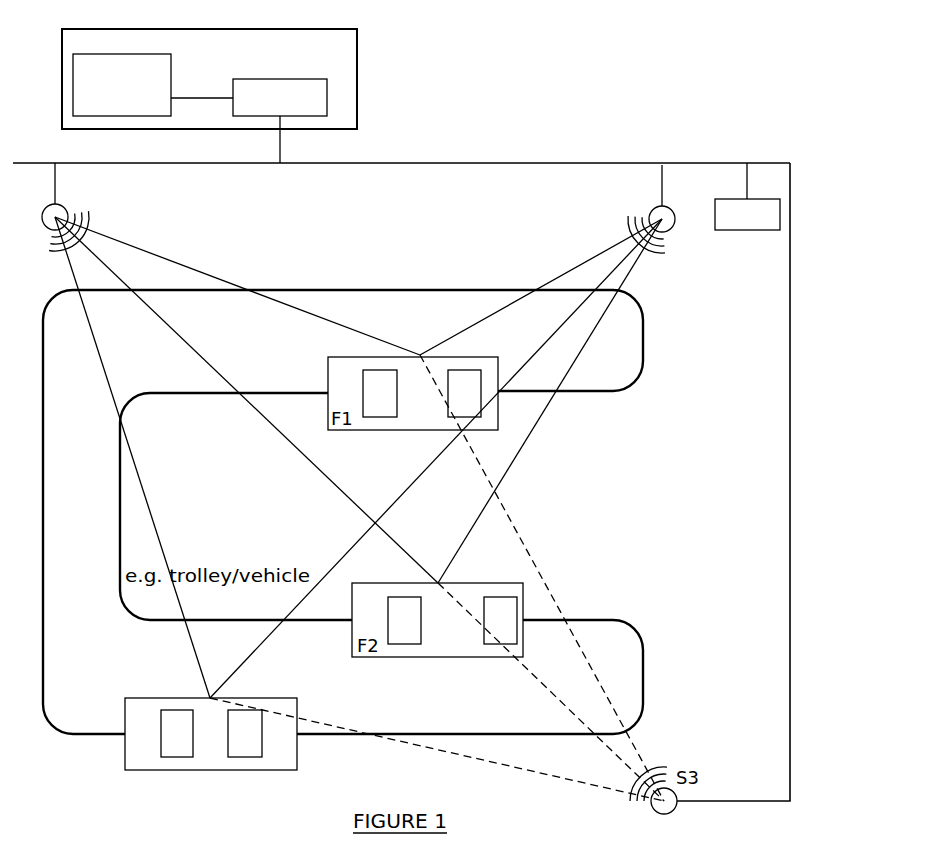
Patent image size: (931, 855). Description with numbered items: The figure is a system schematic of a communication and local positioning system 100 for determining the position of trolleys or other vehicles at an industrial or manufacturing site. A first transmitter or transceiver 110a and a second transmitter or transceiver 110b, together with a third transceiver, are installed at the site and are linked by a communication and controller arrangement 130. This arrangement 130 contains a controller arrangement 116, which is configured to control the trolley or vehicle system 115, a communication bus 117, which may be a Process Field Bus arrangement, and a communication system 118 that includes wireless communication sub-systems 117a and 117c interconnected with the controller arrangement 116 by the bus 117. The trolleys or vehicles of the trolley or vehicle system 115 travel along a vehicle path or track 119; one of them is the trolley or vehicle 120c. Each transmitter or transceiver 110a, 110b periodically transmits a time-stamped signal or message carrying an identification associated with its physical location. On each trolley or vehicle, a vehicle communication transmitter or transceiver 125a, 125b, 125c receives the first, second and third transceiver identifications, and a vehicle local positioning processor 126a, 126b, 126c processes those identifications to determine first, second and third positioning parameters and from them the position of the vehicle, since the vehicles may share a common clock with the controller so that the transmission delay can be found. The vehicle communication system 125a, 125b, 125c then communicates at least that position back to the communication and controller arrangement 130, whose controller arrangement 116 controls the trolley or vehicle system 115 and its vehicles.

The communication and local positioning system 100 is at (463, 72).
The first transmitter or transceiver 110a is at (68, 210).
The second transmitter or transceiver 110b is at (652, 211).
The trolley or vehicle system 115 is at (374, 512).
The controller arrangement 116 is at (122, 54).
The communication bus 117 is at (465, 163).
The wireless communication sub-system 117a is at (747, 212).
The wireless communication sub-system 117c is at (790, 333).
The communication system 118 is at (280, 79).
The track 119 is at (632, 391).
The trolley or vehicle 120c is at (210, 770).
The vehicle communication transmitter or transceiver 125a is at (467, 370).
The vehicle communication transmitter or transceiver 125b is at (498, 597).
The vehicle communication transmitter or transceiver 125c is at (252, 710).
The vehicle local positioning processor 126a is at (378, 370).
The vehicle local positioning processor 126b is at (403, 644).
The vehicle local positioning processor 126c is at (177, 710).
The communication and controller arrangement 130 is at (357, 68).